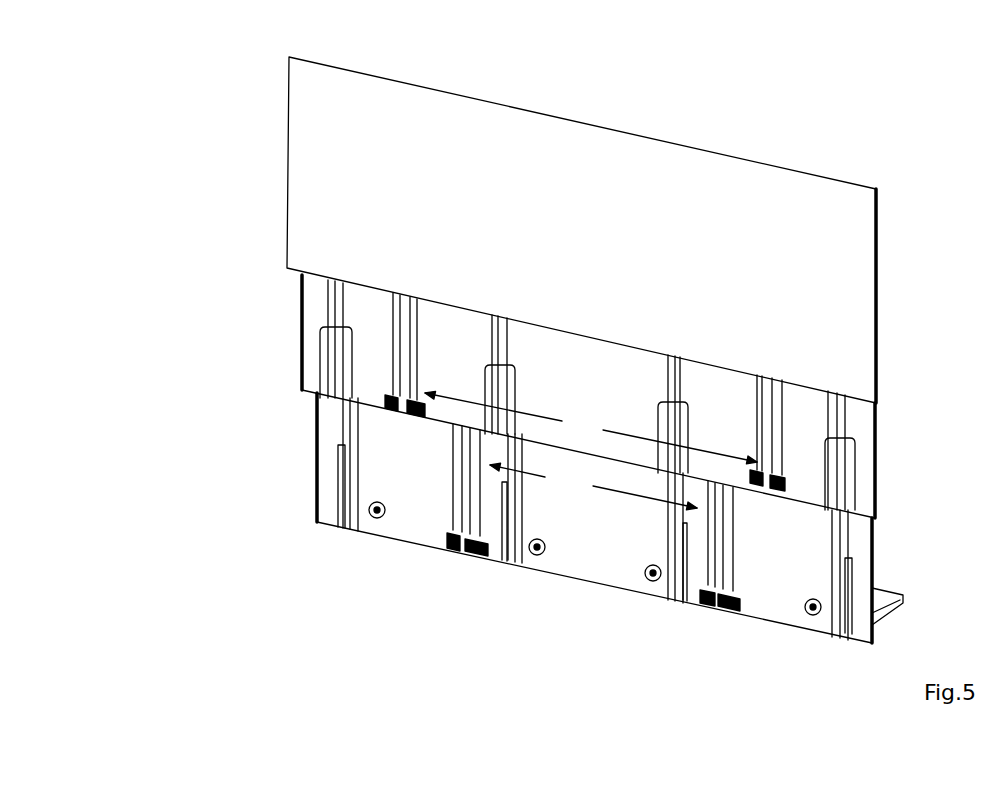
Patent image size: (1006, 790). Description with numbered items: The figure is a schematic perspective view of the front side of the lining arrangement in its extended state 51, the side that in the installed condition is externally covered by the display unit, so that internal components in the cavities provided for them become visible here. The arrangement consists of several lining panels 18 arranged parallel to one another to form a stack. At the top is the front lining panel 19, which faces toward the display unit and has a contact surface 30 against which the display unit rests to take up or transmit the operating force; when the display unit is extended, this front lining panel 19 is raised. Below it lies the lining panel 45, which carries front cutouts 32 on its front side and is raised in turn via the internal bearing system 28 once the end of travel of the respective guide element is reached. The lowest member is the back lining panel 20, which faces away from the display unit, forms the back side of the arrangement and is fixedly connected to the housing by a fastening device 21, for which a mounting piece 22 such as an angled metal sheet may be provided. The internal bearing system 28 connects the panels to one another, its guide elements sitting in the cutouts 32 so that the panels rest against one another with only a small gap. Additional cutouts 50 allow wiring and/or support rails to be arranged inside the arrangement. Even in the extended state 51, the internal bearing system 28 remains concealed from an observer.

The extended state 51 is at (835, 85).
The contact surface 30 is at (771, 205).
The front lining panel 19 is at (877, 231).
The lining panel 18 is at (577, 454).
The lining panel 45 is at (877, 440).
The back lining panel 20 is at (874, 540).
The mounting piece 22 is at (890, 612).
The cutout 32 is at (417, 331).
The additional cutout 50 is at (327, 390).
The internal bearing system 28 is at (591, 450).
The fastening device 21 is at (529, 548).